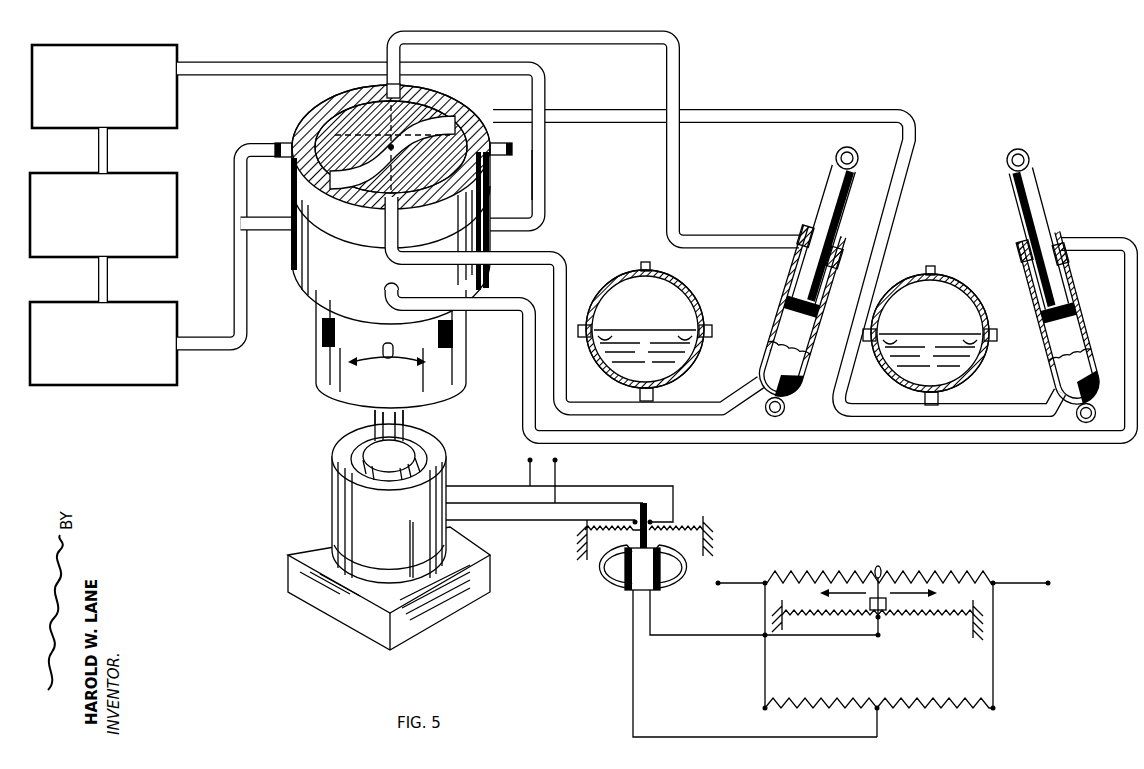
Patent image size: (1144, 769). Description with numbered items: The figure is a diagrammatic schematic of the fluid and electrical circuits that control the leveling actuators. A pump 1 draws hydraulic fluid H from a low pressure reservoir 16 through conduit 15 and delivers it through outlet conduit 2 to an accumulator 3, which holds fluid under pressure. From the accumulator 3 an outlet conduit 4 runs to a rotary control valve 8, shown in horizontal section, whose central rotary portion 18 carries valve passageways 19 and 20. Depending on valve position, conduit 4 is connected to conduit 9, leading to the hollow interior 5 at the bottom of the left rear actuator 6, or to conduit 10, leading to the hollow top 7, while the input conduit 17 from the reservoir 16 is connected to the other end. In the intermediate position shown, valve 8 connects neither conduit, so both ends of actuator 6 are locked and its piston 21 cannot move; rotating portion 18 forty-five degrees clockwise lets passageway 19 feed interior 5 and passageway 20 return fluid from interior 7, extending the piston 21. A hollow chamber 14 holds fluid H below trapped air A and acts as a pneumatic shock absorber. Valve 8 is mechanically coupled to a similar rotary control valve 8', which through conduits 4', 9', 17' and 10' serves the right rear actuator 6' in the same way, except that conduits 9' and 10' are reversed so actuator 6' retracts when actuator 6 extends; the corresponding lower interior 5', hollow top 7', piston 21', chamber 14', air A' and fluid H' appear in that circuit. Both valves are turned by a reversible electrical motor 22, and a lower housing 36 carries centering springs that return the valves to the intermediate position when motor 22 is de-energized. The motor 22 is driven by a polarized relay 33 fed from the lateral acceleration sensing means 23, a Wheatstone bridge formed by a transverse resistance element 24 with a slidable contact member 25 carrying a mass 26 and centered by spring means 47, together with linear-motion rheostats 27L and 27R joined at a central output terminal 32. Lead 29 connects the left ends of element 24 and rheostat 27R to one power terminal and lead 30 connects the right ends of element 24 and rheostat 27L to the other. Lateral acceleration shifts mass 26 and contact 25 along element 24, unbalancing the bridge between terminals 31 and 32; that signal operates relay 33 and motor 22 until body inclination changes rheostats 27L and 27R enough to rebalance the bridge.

The pump 1 is at (150, 200).
The outlet conduit 2 is at (100, 287).
The accumulator 3 is at (155, 325).
The outlet conduit 4 is at (227, 267).
The conduit 4' is at (267, 243).
The hollow interior 5 is at (789, 320).
The hydraulic cylinder 5' is at (1062, 326).
The left rear actuator 6 is at (779, 271).
The right rear actuator 6' is at (1059, 271).
The hollow top 7 is at (828, 228).
The piston rod 7' is at (1058, 232).
The rotary control valve 8 is at (344, 266).
The rotary control valve 8' is at (361, 349).
The conduit 9 is at (577, 303).
The conduit 9' is at (758, 340).
The conduit 10 is at (593, 123).
The conduit 10' is at (776, 248).
The hollow chamber 14 is at (645, 325).
The accumulator 14' is at (930, 327).
The conduit 15 is at (100, 156).
The low pressure reservoir 16 is at (157, 60).
The input conduit 17 is at (358, 114).
The conduit 17' is at (564, 178).
The central rotary portion 18 is at (335, 125).
The valve passageway 19 is at (488, 186).
The valve passageway 20 is at (452, 124).
The piston 21 is at (793, 271).
The cylinder head 21' is at (1065, 282).
The reversible electrical motor means 22 is at (360, 522).
The lateral acceleration sensing means 23 is at (1025, 676).
The resistance element 24 is at (945, 578).
The slidable contact member 25 is at (875, 568).
The mass 26 is at (884, 594).
The variable rheostat 27R is at (855, 690).
The variable rheostat 27L is at (962, 688).
The lead 29 is at (737, 582).
The lead 30 is at (1018, 582).
The terminal 31 is at (870, 622).
The central output terminal 32 is at (880, 622).
The polarized relay 33 is at (612, 588).
The lower housing 36 is at (322, 590).
The spring means 47 is at (960, 630).
The air A is at (635, 260).
The air space A' is at (929, 260).
The working fluid H is at (659, 354).
The hydraulic fluid H' is at (945, 358).